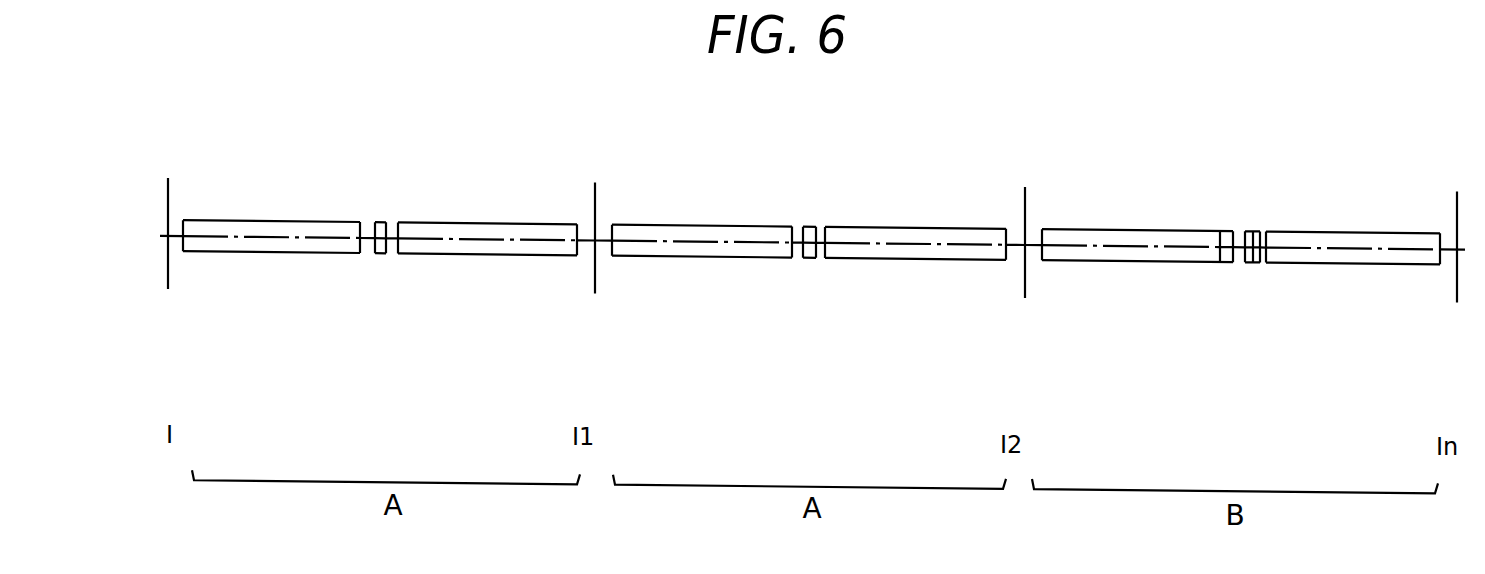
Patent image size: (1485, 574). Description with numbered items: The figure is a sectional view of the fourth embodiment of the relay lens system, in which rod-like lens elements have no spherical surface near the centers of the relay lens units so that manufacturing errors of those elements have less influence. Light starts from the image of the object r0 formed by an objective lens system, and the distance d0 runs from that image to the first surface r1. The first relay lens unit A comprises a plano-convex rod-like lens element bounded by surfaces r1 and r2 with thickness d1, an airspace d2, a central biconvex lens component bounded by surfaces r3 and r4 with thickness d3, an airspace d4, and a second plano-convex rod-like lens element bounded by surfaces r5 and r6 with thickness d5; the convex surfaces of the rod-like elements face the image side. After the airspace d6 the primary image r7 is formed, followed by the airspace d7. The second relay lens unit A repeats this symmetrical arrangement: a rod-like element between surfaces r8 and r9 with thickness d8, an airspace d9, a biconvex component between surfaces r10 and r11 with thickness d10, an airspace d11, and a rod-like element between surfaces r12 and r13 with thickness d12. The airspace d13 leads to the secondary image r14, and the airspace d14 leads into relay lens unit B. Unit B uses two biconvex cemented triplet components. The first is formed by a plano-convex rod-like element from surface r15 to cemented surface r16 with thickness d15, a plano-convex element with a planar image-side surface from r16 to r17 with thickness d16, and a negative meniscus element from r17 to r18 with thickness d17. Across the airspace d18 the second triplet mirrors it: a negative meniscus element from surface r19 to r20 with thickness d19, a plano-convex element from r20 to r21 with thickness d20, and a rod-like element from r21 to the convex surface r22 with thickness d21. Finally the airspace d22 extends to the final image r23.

The image of object r0 is at (166, 193).
The first surface r1 is at (184, 221).
The lens surface r2 is at (359, 221).
The lens surface r3 is at (375, 222).
The lens surface r4 is at (387, 222).
The lens surface r5 is at (399, 222).
The lens surface r6 is at (576, 223).
The primary image r7 is at (595, 209).
The lens surface r8 is at (611, 224).
The lens surface r9 is at (791, 224).
The lens surface r10 is at (803, 225).
The lens surface r11 is at (815, 225).
The lens surface r12 is at (826, 225).
The lens surface r13 is at (1005, 226).
The secondary image r14 is at (1025, 210).
The lens surface r15 is at (1043, 228).
The cemented surface r16 is at (1219, 228).
The cemented surface r17 is at (1232, 229).
The lens surface r18 is at (1245, 229).
The lens surface r19 is at (1254, 229).
The cemented surface r20 is at (1261, 229).
The cemented surface r21 is at (1267, 231).
The lens surface r22 is at (1436, 232).
The final image r23 is at (1457, 211).
The distance from object image d0 is at (174, 240).
The lens thickness d1 is at (272, 240).
The airspace d2 is at (366, 240).
The lens thickness d3 is at (381, 244).
The airspace d4 is at (392, 240).
The lens thickness d5 is at (488, 244).
The airspace d6 is at (586, 241).
The airspace d7 is at (604, 241).
The lens thickness d8 is at (683, 246).
The airspace d9 is at (798, 242).
The lens thickness d10 is at (809, 246).
The airspace d11 is at (821, 242).
The lens thickness d12 is at (893, 247).
The airspace d13 is at (1016, 243).
The airspace d14 is at (1034, 243).
The lens thickness d15 is at (1116, 250).
The lens thickness d16 is at (1226, 251).
The lens thickness d17 is at (1239, 250).
The airspace d18 is at (1249, 251).
The lens thickness d19 is at (1257, 251).
The lens thickness d20 is at (1264, 251).
The lens thickness d21 is at (1355, 256).
The airspace d22 is at (1447, 256).